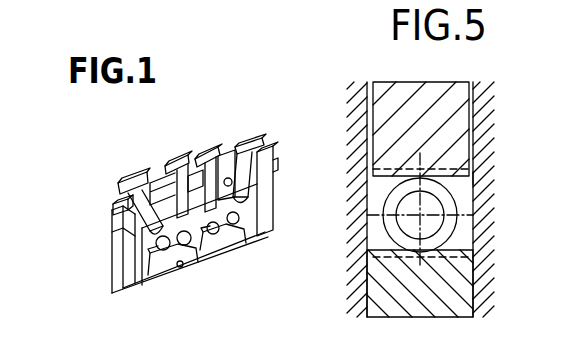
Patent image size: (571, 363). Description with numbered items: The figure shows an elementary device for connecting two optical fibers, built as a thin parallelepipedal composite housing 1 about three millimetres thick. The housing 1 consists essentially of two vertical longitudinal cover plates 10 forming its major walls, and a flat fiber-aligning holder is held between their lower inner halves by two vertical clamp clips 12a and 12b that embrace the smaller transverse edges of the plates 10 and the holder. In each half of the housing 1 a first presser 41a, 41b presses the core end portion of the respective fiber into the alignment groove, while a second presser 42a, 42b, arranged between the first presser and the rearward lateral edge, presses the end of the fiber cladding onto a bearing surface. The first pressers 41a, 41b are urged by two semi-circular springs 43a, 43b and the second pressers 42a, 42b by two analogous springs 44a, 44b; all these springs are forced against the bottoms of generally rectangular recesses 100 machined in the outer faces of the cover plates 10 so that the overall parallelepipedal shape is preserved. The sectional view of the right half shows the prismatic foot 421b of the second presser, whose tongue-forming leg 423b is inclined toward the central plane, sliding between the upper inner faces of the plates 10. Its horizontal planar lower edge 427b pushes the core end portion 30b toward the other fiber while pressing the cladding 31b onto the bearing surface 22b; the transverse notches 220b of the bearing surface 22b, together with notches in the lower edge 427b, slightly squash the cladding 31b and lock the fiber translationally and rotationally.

In FIG. 1, the composite housing 1 is at (66, 256).
In FIG. 1, the cover plate 10 is at (116, 238).
In FIG. 5, the cover plate 10 is at (352, 96).
In FIG. 1, the clamp clip 12a is at (114, 283).
In FIG. 1, the clamp clip 12b is at (278, 200).
In FIG. 1, the recess 100 is at (266, 240).
In FIG. 1, the first presser 41a is at (169, 160).
In FIG. 1, the first presser 41b is at (209, 142).
In FIG. 1, the second presser 42a is at (132, 176).
In FIG. 1, the second presser 42b is at (250, 145).
In FIG. 1, the spring 43a is at (190, 262).
In FIG. 1, the spring 43b is at (222, 244).
In FIG. 1, the spring 44a is at (156, 282).
In FIG. 1, the spring 44b is at (270, 214).
In FIG. 5, the prismatic foot 421b is at (392, 94).
In FIG. 5, the leg 423b is at (466, 160).
In FIG. 5, the lower edge of the foot 427b is at (466, 179).
In FIG. 5, the cladding 31b is at (458, 204).
In FIG. 5, the core end portion 30b is at (454, 236).
In FIG. 5, the bearing surface 22b is at (460, 250).
In FIG. 5, the transverse notch 220b is at (470, 286).